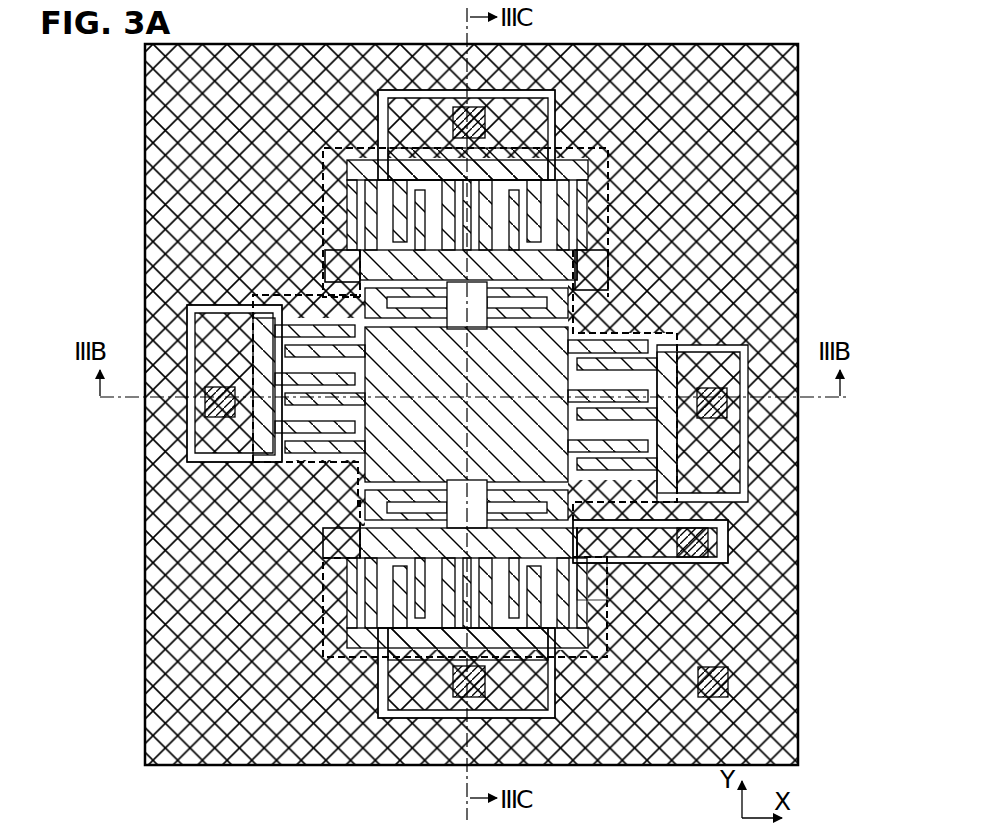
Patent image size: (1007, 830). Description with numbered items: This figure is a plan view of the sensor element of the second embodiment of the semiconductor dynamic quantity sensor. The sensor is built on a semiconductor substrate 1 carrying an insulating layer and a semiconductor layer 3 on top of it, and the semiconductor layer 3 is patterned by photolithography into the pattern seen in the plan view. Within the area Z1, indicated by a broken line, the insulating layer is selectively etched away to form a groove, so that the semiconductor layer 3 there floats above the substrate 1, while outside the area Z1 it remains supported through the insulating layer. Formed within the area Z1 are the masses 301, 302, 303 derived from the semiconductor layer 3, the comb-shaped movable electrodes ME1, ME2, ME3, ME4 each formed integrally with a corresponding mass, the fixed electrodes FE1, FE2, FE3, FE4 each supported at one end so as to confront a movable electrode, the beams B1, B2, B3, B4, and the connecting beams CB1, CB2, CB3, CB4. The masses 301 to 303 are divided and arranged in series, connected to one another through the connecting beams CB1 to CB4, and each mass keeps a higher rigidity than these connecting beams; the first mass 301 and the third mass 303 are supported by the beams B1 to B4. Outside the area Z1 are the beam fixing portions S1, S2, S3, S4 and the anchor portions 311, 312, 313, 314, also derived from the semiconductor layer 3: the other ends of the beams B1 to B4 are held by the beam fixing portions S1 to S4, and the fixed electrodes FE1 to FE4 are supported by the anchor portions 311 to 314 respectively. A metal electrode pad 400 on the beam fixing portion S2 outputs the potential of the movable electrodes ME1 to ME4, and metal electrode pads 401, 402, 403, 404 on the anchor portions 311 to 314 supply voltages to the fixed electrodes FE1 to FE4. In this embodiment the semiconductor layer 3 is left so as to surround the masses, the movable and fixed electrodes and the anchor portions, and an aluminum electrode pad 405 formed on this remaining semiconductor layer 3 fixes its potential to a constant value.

The semiconductor substrate 1 is at (145, 747).
The semiconductor layer 3 is at (312, 158).
The first mass 301 is at (606, 566).
The second mass 302 is at (630, 340).
The third mass 303 is at (612, 298).
The anchor portion 311 is at (556, 702).
The anchor portion 312 is at (552, 92).
The anchor portion 313 is at (226, 306).
The anchor portion 314 is at (750, 352).
The electrode pad 400 is at (690, 562).
The electrode pad 401 is at (470, 718).
The electrode pad 402 is at (469, 106).
The electrode pad 403 is at (221, 452).
The electrode pad 404 is at (730, 420).
The electrode pad 405 is at (728, 683).
The movable electrode ME1 is at (372, 668).
The movable electrode ME2 is at (549, 150).
The movable electrode ME3 is at (266, 462).
The movable electrode ME4 is at (712, 346).
The fixed electrode FE1 is at (556, 662).
The fixed electrode FE2 is at (382, 176).
The fixed electrode FE3 is at (254, 302).
The fixed electrode FE4 is at (731, 546).
The beam B1 is at (340, 626).
The beam B2 is at (592, 620).
The beam B3 is at (347, 212).
The beam B4 is at (595, 204).
The beam fixing portion S1 is at (330, 541).
The beam fixing portion S2 is at (612, 600).
The beam fixing portion S3 is at (332, 266).
The beam fixing portion S4 is at (612, 272).
The connecting beam CB1 is at (350, 503).
The connecting beam CB2 is at (572, 506).
The connecting beam CB3 is at (321, 290).
The connecting beam CB4 is at (578, 300).
The area Z1 is at (608, 166).